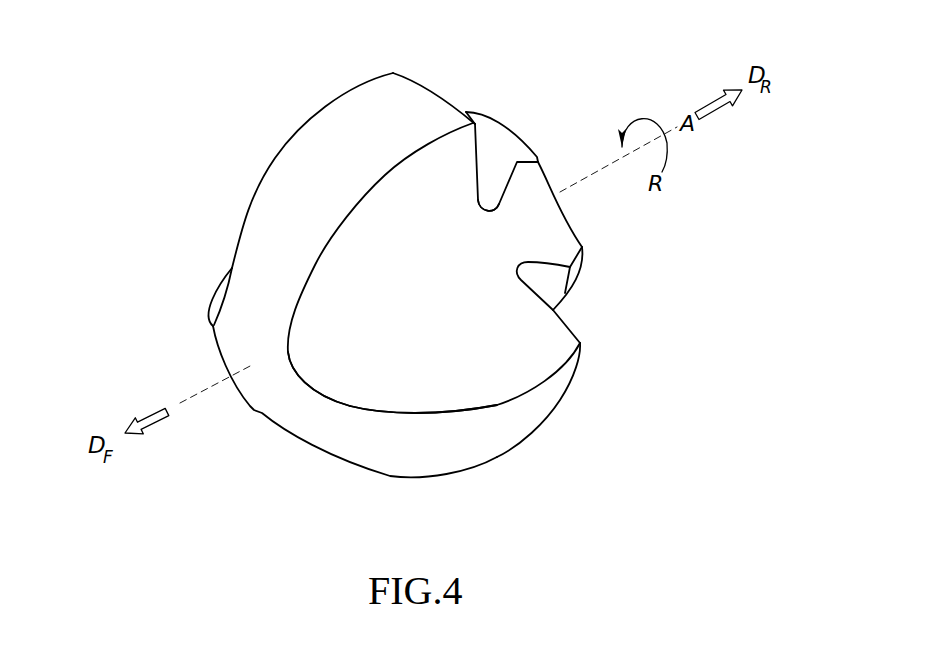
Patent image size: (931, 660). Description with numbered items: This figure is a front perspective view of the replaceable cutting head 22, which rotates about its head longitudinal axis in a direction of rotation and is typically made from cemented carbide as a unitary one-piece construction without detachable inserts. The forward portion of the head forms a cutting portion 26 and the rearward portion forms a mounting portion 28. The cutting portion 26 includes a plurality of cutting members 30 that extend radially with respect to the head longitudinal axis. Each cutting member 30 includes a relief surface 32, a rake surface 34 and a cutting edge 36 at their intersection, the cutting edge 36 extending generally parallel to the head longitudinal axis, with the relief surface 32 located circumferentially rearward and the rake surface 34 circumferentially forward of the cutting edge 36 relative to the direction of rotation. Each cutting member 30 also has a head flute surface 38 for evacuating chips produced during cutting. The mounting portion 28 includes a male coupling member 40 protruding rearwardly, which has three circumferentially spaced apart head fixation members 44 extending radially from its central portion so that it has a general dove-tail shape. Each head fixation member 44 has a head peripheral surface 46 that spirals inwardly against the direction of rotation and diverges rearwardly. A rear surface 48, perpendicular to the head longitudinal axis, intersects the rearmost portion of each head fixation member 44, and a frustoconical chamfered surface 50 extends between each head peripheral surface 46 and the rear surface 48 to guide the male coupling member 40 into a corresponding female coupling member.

The replaceable cutting head 22 is at (620, 67).
The cutting portion 26 is at (225, 195).
The mounting portion 28 is at (633, 230).
The cutting member 30 is at (270, 130).
The relief surface 32 is at (445, 450).
The rake surface 34 is at (523, 360).
The cutting edge 36 is at (470, 413).
The head flute surface 38 is at (497, 317).
The male coupling member 40 is at (595, 283).
The head fixation member 44 is at (493, 103).
The head peripheral surface 46 is at (495, 163).
The rear surface 48 is at (575, 208).
The chamfered surface 50 is at (482, 120).